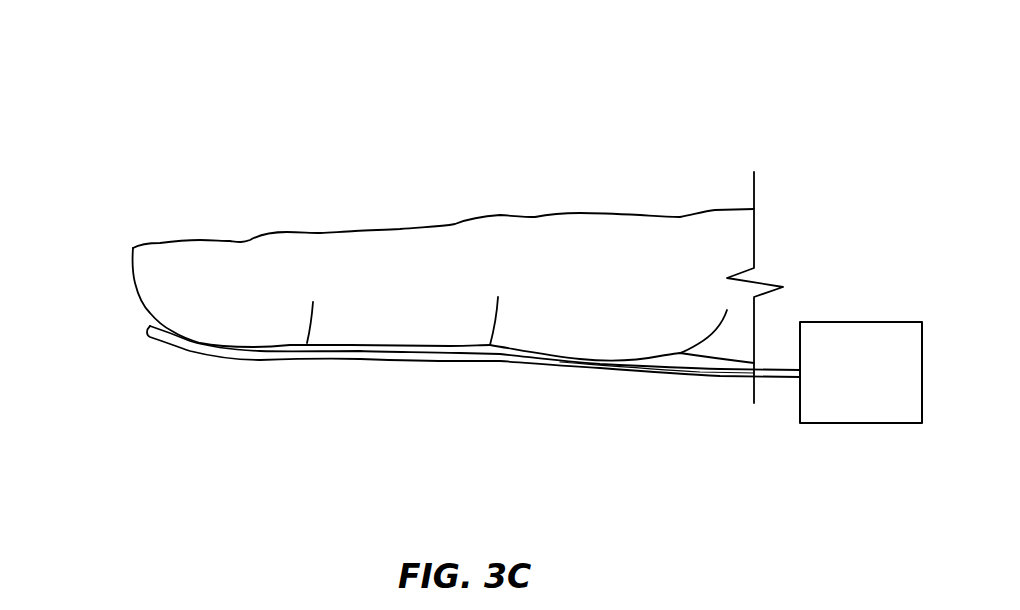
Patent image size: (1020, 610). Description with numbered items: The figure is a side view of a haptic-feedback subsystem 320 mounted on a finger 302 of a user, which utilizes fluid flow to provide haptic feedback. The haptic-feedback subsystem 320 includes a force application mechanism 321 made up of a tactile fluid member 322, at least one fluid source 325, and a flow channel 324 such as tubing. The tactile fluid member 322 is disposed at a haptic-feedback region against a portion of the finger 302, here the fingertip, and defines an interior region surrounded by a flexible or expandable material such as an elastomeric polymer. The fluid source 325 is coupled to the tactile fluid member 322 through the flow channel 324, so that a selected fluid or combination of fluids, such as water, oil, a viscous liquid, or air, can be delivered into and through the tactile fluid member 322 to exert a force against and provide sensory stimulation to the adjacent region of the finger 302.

The haptic-feedback subsystem 320 is at (78, 72).
The finger 302 is at (208, 240).
The force application mechanism 321 is at (826, 240).
The tactile fluid member 322 is at (292, 378).
The flow channel 324 is at (545, 370).
The fluid source 325 is at (861, 372).